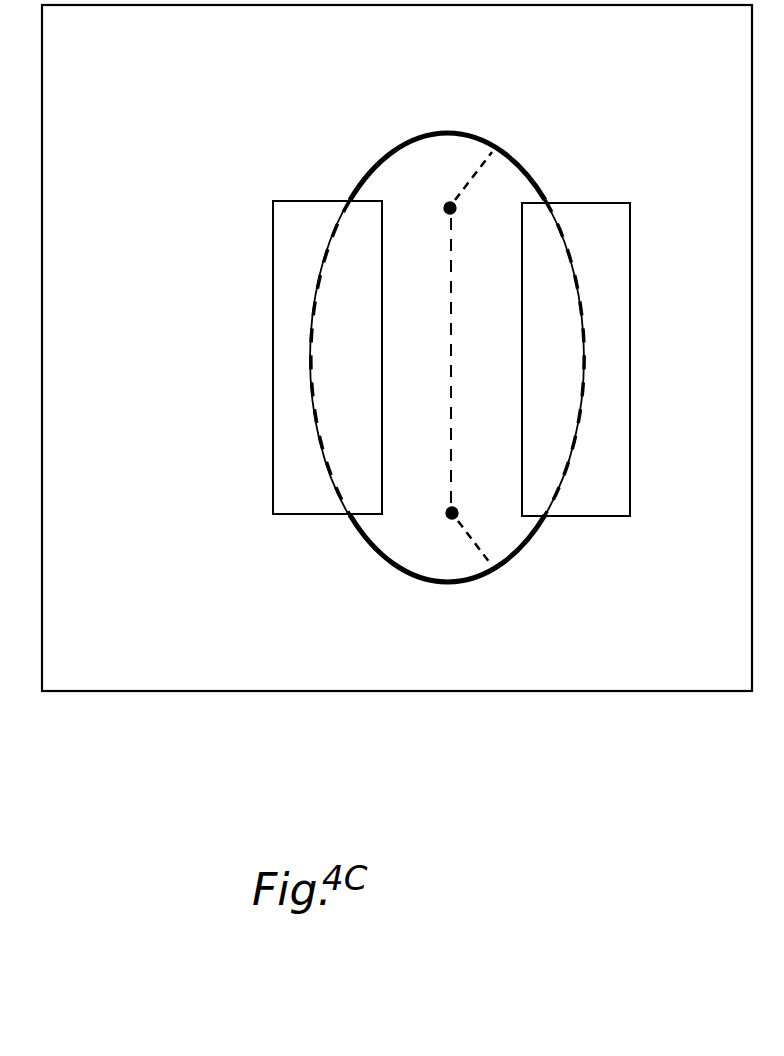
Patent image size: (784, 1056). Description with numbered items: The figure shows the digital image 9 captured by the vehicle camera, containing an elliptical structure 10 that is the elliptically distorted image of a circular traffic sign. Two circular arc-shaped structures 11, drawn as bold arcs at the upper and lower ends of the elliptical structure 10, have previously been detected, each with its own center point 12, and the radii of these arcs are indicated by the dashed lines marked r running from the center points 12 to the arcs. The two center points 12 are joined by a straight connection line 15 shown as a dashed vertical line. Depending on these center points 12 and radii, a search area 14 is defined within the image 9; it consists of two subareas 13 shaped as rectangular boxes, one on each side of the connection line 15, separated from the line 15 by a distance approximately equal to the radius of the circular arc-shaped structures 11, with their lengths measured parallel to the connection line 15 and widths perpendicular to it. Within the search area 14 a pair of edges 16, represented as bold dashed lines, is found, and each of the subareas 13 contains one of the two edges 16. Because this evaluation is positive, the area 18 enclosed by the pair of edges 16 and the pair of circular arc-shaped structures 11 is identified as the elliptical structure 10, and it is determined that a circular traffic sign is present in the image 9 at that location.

The image 9 is at (633, 692).
The elliptical structure 10 is at (356, 199).
The circular arc-shaped structure 11 is at (396, 148).
The center point 12 is at (458, 210).
The subarea 13 is at (271, 460).
The search area 14 is at (272, 315).
The straight connection line 15 is at (449, 405).
The edge 16 is at (325, 255).
The area 18 is at (503, 197).